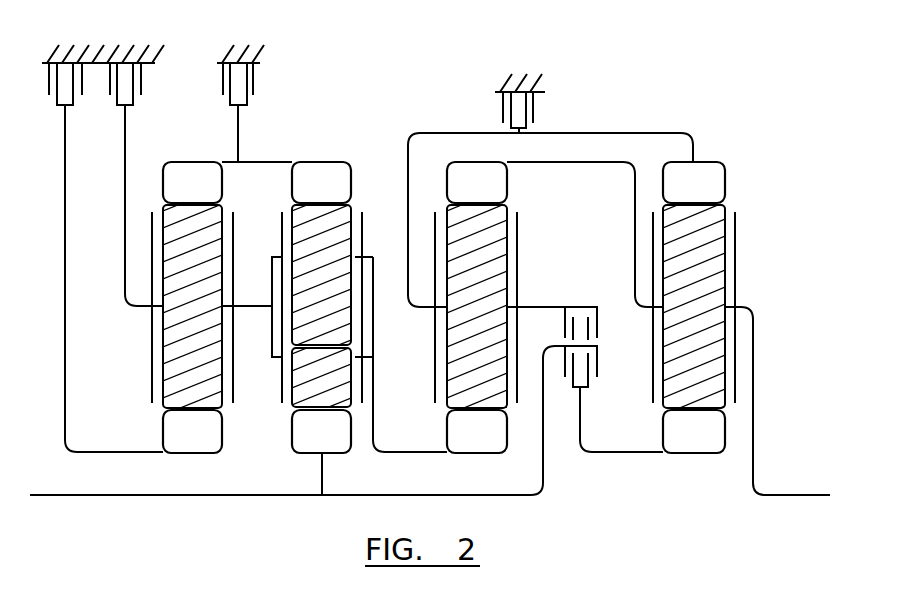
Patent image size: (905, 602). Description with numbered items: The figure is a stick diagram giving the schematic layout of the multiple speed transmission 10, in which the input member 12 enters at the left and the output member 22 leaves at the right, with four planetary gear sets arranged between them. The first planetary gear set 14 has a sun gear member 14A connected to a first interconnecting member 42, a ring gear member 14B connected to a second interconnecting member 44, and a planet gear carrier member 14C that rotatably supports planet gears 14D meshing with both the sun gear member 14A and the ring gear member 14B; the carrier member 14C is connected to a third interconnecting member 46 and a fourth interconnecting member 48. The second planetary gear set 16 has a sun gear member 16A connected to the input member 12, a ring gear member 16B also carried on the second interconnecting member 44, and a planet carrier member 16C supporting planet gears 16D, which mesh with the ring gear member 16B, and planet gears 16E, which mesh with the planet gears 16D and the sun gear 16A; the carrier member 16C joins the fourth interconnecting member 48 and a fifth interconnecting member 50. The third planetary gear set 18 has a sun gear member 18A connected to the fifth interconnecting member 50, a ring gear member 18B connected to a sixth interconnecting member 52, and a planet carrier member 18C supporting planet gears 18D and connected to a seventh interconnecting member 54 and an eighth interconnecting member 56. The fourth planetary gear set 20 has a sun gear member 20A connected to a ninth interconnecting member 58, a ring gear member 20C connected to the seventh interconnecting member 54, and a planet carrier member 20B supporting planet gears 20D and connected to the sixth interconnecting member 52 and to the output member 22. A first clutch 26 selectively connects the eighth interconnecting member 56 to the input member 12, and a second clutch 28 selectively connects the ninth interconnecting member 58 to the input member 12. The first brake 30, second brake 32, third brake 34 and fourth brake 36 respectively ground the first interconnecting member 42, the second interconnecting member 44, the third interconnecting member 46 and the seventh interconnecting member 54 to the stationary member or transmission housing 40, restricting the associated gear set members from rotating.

The multiple speed transmission 10 is at (737, 74).
The input member 12 is at (77, 496).
The first planetary gear set 14 is at (181, 470).
The second planetary gear set 16 is at (296, 470).
The third planetary gear set 18 is at (491, 470).
The fourth planetary gear set 20 is at (687, 470).
The output member 22 is at (800, 497).
The first clutch 26 is at (598, 325).
The second clutch 28 is at (598, 365).
The first brake 30 is at (49, 92).
The second brake 32 is at (255, 80).
The third brake 34 is at (110, 92).
The fourth brake 36 is at (535, 108).
The stationary member or transmission housing 40 is at (160, 53).
The first shaft or interconnecting member 42 is at (65, 219).
The second shaft or interconnecting member 44 is at (277, 160).
The third shaft or interconnecting member 46 is at (125, 219).
The fourth shaft or interconnecting member 48 is at (248, 308).
The fifth shaft or interconnecting member 50 is at (410, 453).
The sixth shaft or interconnecting member 52 is at (542, 163).
The seventh shaft or interconnecting member 54 is at (448, 133).
The eighth shaft or interconnecting member 56 is at (543, 307).
The ninth shaft or interconnecting member 58 is at (607, 455).
The sun gear member 14A is at (211, 443).
The ring gear member 14B is at (211, 194).
The planet gear carrier member 14C is at (235, 235).
The planet gears 14D is at (211, 316).
The sun gear member 16A is at (340, 443).
The ring gear member 16B is at (340, 194).
The planet carrier member 16C is at (363, 232).
The planet gears 16D is at (340, 283).
The planet gears 16E is at (340, 389).
The sun gear member 18A is at (496, 443).
The ring gear member 18B is at (496, 194).
The planet carrier member 18C is at (435, 367).
The planet gears 18D is at (496, 316).
The sun gear member 20A is at (713, 443).
The planet carrier member 20B is at (736, 232).
The ring gear member 20C is at (713, 194).
The planet gears 20D is at (713, 316).